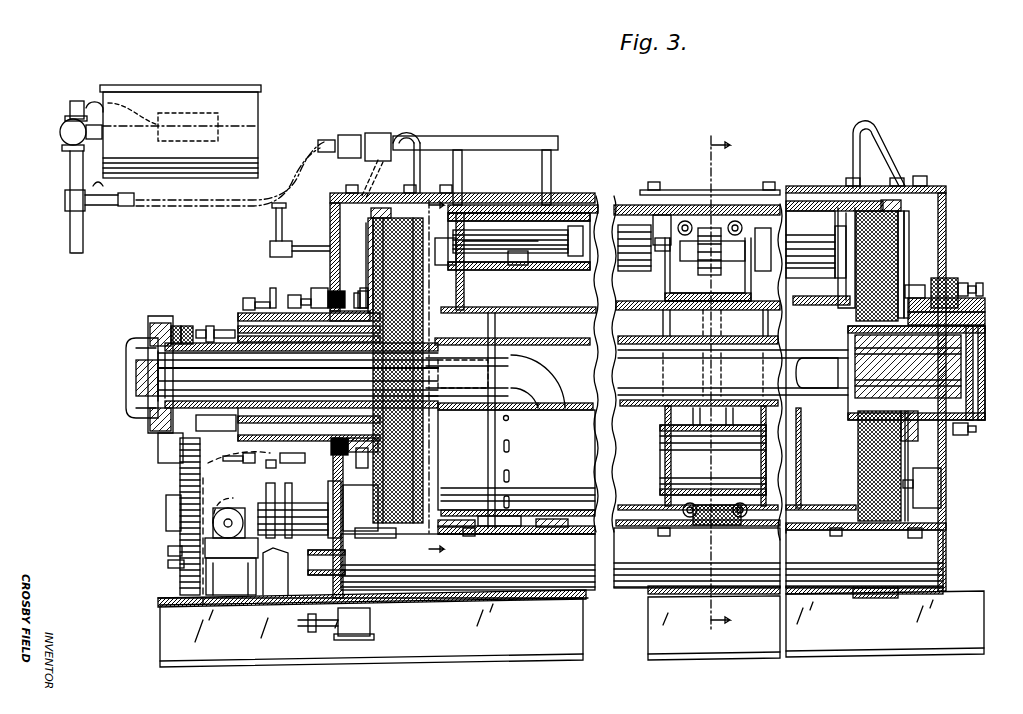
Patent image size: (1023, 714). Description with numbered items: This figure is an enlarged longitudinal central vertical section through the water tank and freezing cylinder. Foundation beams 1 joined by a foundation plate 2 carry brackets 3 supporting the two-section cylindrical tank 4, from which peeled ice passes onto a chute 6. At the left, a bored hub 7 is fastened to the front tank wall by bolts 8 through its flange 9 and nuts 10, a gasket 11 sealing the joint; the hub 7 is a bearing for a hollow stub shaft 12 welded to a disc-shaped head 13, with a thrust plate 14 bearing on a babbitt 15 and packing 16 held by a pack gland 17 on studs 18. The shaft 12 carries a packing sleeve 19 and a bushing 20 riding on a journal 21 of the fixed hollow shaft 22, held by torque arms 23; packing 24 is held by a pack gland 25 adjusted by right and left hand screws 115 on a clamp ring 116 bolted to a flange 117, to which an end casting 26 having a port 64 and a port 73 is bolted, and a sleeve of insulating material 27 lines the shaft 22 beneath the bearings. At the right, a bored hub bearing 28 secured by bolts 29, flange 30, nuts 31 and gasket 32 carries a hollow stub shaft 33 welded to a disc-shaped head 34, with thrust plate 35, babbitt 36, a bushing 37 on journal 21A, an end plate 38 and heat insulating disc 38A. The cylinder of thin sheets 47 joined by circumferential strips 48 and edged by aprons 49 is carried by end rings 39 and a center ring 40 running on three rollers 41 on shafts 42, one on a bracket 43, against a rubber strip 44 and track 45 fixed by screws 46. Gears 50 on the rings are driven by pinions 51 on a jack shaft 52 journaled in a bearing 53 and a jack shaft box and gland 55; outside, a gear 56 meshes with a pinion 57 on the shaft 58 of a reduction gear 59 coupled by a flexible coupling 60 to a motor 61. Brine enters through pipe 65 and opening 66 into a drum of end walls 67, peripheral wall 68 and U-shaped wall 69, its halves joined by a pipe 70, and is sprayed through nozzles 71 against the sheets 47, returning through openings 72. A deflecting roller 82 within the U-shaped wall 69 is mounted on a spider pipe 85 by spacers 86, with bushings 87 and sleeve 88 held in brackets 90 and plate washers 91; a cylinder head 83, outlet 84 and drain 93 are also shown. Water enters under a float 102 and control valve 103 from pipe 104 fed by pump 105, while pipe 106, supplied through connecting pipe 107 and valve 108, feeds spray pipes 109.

The foundation beams 1 is at (470, 652).
The foundation plate 2 is at (240, 594).
The brackets 3 is at (414, 591).
The cylindrical tank 4 is at (290, 252).
The chute 6 is at (442, 377).
The bored hub 7 is at (288, 278).
The bolts 8 is at (305, 280).
The flange 9 is at (317, 274).
The nuts 10 is at (321, 288).
The gasket 11 is at (730, 383).
The hollow stub shaft 12 is at (338, 290).
The disc-shaped head 13 is at (361, 245).
The thrust plate 14 is at (354, 274).
The babbitt 15 is at (356, 284).
The packing 16 is at (270, 288).
The pack gland 17 is at (244, 290).
The studs 18 is at (254, 292).
The packing sleeve 19 is at (228, 305).
The bushing 20 is at (279, 390).
The journal 21 is at (305, 390).
The journal 21A is at (905, 362).
The hollow shaft 22 is at (532, 310).
The torque arms 23 is at (153, 438).
The packing 24 is at (250, 385).
The pack gland 25 is at (220, 385).
The end casting 26 is at (160, 315).
The sleeve of insulating material 27 is at (375, 388).
The bored hub bearing 28 is at (970, 405).
The bolts 29 is at (973, 278).
The flange 30 is at (955, 274).
The nuts 31 is at (965, 278).
The gasket 32 is at (940, 270).
The hollow stub shaft 33 is at (915, 355).
The disc-shaped head 34 is at (896, 224).
The thrust plate 35 is at (902, 258).
The babbitt 36 is at (913, 278).
The bushing 37 is at (908, 367).
The end plate 38 is at (946, 360).
The heat insulating disc 38A is at (948, 372).
The end rings 39 is at (366, 237).
The center ring 40 is at (717, 220).
The rollers 41 is at (672, 318).
The shaft 42 is at (650, 272).
The bracket 43 is at (729, 326).
The rubber strip 44 is at (685, 198).
The track 45 is at (702, 207).
The screws 46 is at (713, 210).
The sheets 47 is at (490, 195).
The circumferential strips 48 is at (544, 193).
The aprons 49 is at (458, 195).
The gear 50 is at (365, 205).
The pinions 51 is at (365, 537).
The jack shaft 52 is at (230, 498).
The bearing 53 is at (937, 485).
The jack shaft box and gland 55 is at (295, 495).
The gear 56 is at (172, 467).
The pinion 57 is at (160, 557).
The shaft 58 is at (158, 545).
The reduction gear 59 is at (262, 530).
The flexible coupling 60 is at (218, 500).
The motor 61 is at (212, 448).
The port 64 is at (129, 374).
The pipe 65 is at (403, 385).
The opening 66 is at (530, 400).
The end walls 67 is at (505, 451).
The peripheral wall 68 is at (550, 506).
The U-shaped wall 69 is at (501, 310).
The pipe 70 is at (683, 440).
The nozzle 71 is at (504, 438).
The openings 72 is at (440, 380).
The port 73 is at (120, 345).
The deflecting roller 82 is at (543, 262).
The cylinder head 83 is at (568, 250).
The outlet 84 is at (520, 508).
The spider pipe 85 is at (552, 250).
The spacers 86 is at (505, 265).
The bushings 87 is at (525, 250).
The sleeve 88 is at (515, 263).
The brackets 90 is at (475, 285).
The plate washers 91 is at (442, 270).
The drain 93 is at (517, 528).
The float 102 is at (173, 132).
The control valve 103 is at (52, 125).
The pipe 104 is at (77, 231).
The pump 105 is at (366, 622).
The pipe 106 is at (502, 130).
The connecting pipe 107 is at (205, 198).
The valve 108 is at (84, 200).
The spray pipe 109 is at (464, 140).
The right and left hand screws 115 is at (205, 320).
The clamp ring 116 is at (185, 318).
The flange 117 is at (172, 316).